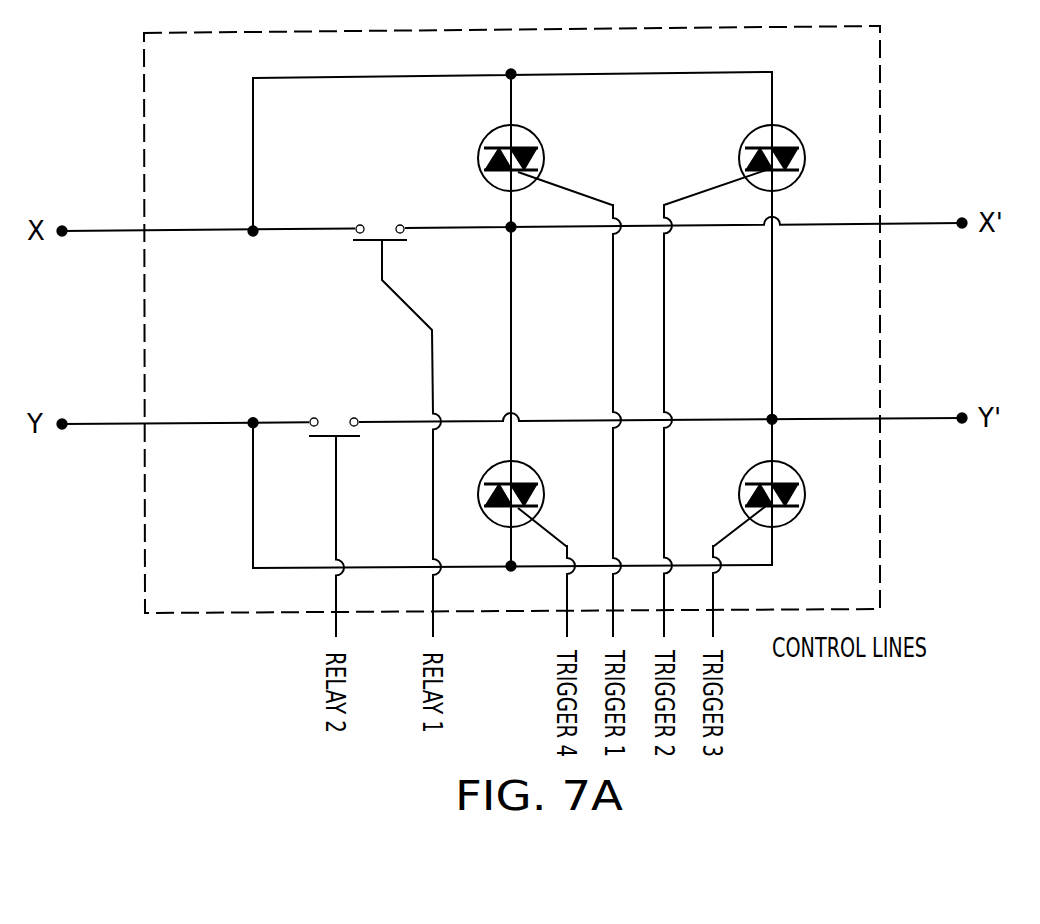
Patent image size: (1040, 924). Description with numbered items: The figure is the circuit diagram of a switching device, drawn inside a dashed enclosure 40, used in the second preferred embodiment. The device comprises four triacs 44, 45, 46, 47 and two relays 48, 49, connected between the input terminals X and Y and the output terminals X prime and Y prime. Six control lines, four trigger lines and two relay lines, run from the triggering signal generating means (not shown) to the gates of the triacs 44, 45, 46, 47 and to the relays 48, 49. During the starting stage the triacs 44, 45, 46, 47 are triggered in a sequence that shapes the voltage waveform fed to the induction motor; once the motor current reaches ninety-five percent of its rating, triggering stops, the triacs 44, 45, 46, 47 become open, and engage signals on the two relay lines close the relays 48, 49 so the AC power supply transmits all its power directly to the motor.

The switching module 40 is at (881, 80).
The triac 44 is at (528, 128).
The triac 45 is at (765, 128).
The triac 46 is at (763, 462).
The triac 47 is at (526, 462).
The relay 48 is at (379, 226).
The relay 49 is at (333, 421).